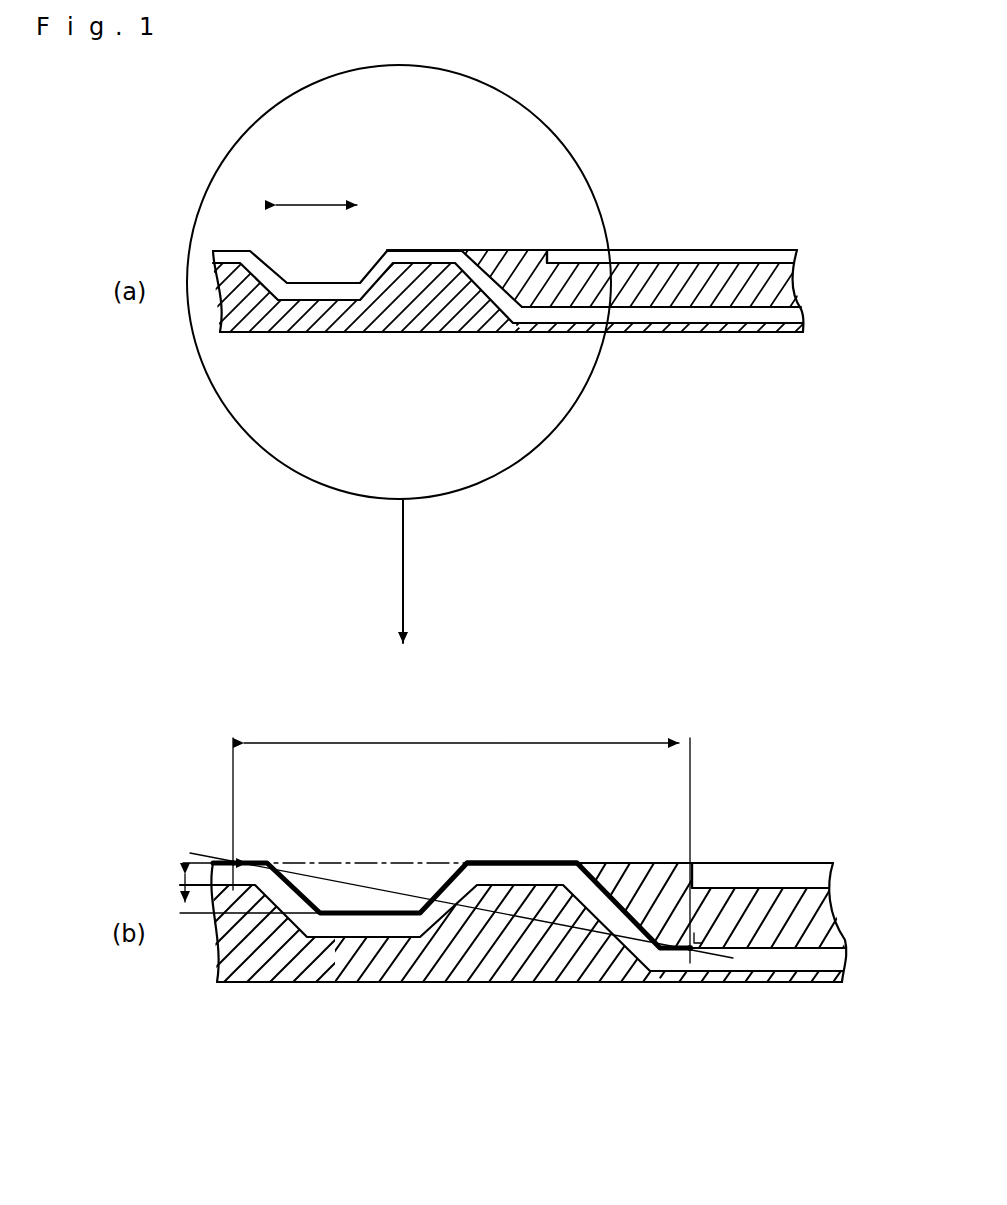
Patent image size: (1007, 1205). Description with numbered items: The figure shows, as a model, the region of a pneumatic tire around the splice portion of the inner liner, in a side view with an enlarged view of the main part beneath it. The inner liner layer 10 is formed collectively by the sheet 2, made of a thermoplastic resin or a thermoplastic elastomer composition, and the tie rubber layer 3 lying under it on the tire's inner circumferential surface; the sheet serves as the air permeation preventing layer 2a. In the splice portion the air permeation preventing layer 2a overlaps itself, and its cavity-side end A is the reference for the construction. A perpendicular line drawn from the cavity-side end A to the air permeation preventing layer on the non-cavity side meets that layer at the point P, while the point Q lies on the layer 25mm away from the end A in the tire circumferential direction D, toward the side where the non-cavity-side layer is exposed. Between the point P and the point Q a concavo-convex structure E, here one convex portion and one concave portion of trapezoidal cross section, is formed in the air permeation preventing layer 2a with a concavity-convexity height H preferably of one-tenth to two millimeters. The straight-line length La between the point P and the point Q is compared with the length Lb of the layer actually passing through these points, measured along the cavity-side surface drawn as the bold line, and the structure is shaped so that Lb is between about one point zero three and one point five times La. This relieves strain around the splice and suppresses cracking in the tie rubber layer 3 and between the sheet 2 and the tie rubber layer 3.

The inner liner layer 10 is at (492, 250).
The tie rubber layer 3 is at (435, 320).
The sheet 2 is at (697, 258).
The air permeation preventing layer 2a is at (797, 962).
The cavity-side end of the splice portion A is at (545, 252).
The concavo-convex structure E is at (455, 255).
The tire circumferential direction D is at (334, 207).
The circumferential distance from end A to point Q 25mm is at (461, 839).
The concavity-convexity height H is at (236, 888).
The point Q is at (235, 862).
The length of the air permeation preventing layer actually passing through P and Q Lb is at (506, 855).
The length of the straight line connecting P and Q La is at (371, 904).
The point P is at (714, 960).